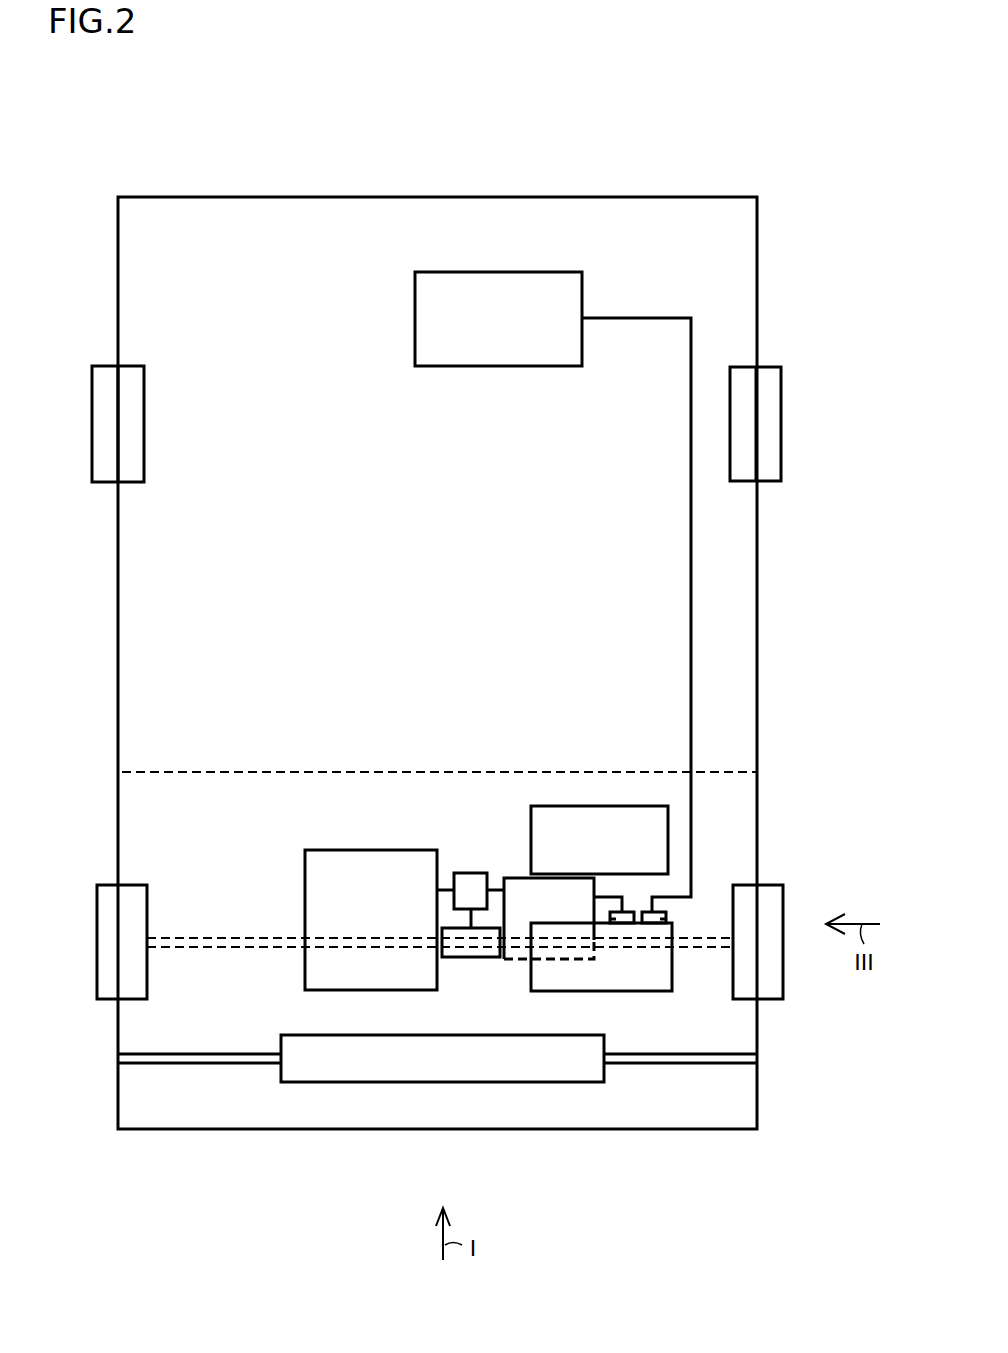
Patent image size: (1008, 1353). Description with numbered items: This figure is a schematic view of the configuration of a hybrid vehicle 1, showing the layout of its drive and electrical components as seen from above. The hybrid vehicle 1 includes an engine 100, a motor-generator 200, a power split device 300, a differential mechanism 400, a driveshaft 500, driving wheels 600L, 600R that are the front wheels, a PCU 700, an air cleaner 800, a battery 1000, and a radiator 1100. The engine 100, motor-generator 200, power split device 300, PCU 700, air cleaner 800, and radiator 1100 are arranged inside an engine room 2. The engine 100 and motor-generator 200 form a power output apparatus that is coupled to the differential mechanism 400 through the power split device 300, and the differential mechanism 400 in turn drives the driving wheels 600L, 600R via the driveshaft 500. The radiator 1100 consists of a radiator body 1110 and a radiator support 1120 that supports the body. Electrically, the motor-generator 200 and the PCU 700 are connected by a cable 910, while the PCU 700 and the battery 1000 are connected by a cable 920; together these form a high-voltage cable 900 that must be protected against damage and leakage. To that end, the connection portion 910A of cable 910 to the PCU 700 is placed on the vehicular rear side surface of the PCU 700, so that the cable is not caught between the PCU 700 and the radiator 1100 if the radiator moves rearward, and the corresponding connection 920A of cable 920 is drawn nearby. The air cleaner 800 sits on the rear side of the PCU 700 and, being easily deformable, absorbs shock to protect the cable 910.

The hybrid vehicle 1 is at (143, 125).
The engine room 2 is at (118, 848).
The engine 100 is at (370, 992).
The motor-generator 200 is at (515, 960).
The power split device 300 is at (470, 873).
The differential mechanism 400 is at (470, 960).
The driveshaft 500 is at (173, 948).
The driving wheel 600R is at (97, 943).
The driving wheel 600L is at (783, 990).
The PCU (Power Control Unit) 700 is at (570, 993).
The air cleaner 800 is at (668, 832).
The cable 900 is at (746, 869).
The cable 910 is at (618, 896).
The cable 920 is at (691, 887).
The connection portion 910A is at (610, 919).
The second sensor terminal 920A is at (666, 919).
The battery 1000 is at (500, 270).
The radiator 1100 is at (437, 1127).
The radiator body 1110 is at (441, 1108).
The radiator support 1120 is at (235, 1065).